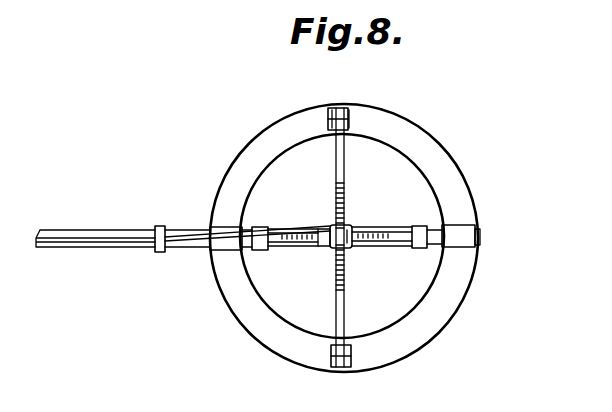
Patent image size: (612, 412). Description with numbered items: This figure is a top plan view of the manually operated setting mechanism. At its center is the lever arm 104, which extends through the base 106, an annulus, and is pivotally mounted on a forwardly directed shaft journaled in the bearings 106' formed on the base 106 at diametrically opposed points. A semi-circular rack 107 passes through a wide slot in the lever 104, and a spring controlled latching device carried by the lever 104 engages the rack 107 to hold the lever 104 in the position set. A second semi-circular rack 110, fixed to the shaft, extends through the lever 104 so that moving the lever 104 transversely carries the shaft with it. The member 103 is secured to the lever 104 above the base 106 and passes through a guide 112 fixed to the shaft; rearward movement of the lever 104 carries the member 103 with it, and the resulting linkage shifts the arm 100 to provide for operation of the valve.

The arm 100 is at (83, 234).
The guide 112 is at (158, 225).
The member 103 is at (188, 236).
The base 106 is at (375, 238).
The bearings 106' is at (346, 261).
The semi-circular rack 107 is at (343, 167).
The semi-circular rack 110 is at (395, 240).
The lever arm 104 is at (338, 249).